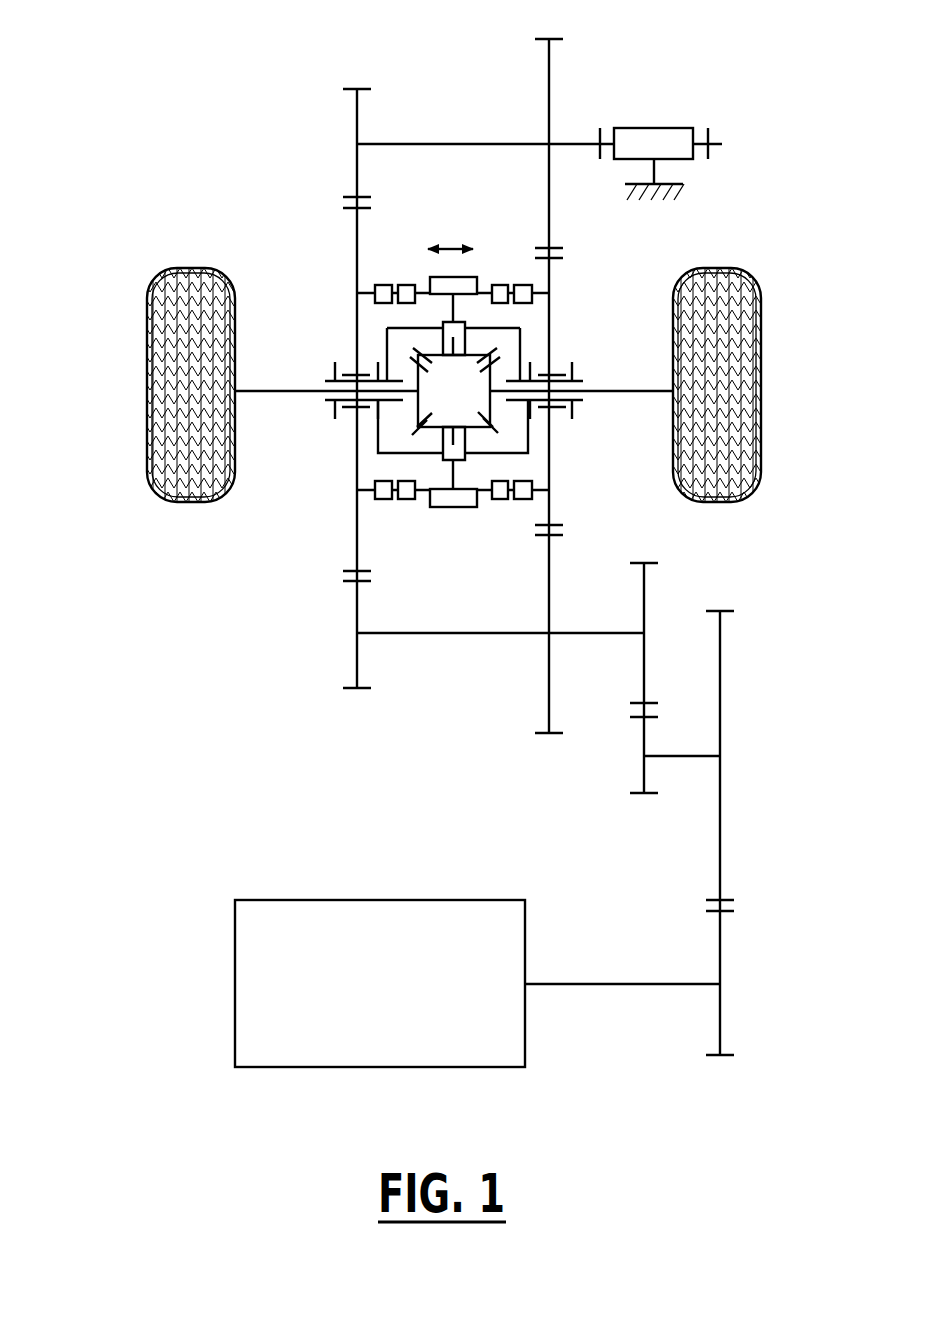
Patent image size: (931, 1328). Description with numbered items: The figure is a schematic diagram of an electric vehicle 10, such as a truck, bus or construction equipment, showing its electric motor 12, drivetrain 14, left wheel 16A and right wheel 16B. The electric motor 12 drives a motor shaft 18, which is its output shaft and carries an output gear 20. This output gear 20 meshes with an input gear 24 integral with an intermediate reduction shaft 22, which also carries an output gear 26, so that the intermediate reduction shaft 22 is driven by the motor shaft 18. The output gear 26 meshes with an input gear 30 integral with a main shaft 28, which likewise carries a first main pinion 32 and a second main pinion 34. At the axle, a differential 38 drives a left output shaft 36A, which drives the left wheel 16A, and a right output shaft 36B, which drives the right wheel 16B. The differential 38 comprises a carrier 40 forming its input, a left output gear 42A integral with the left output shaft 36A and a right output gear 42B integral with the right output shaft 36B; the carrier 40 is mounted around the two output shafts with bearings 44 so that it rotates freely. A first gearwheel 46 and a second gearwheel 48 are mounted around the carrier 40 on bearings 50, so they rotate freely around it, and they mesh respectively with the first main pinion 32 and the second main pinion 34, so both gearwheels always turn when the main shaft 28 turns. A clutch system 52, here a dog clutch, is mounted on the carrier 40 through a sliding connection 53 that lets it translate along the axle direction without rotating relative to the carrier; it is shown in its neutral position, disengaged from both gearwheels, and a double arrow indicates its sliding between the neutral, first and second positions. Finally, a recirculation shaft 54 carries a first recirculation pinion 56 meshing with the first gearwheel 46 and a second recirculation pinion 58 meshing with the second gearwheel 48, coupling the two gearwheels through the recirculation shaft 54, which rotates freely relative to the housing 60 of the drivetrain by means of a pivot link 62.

The electric vehicle 10 is at (205, 107).
The electric motor 12 is at (380, 983).
The drivetrain 14 is at (212, 752).
The left wheel 16A is at (190, 268).
The right wheel 16B is at (713, 268).
The motor shaft 18 is at (610, 984).
The output gear 20 is at (720, 1027).
The intermediate reduction shaft 22 is at (682, 758).
The input gear 24 is at (720, 833).
The output gear 26 is at (644, 735).
The main shaft 28 is at (475, 633).
The input gear 30 is at (647, 603).
The first main pinion 32 is at (549, 662).
The second main pinion 34 is at (357, 655).
The left output shaft 36A is at (258, 390).
The right output shaft 36B is at (650, 390).
The differential 38 is at (552, 313).
The carrier 40 is at (503, 453).
The left output gear 42A is at (412, 358).
The right output gear 42B is at (549, 495).
The bearings 44 is at (324, 383).
The first gearwheel 46 is at (549, 327).
The second gearwheel 48 is at (357, 327).
The bearings 50 is at (346, 418).
The clutch system 52 is at (419, 500).
The sliding connection 53 is at (458, 507).
The recirculation shaft 54 is at (418, 144).
The first recirculation pinion 56 is at (552, 57).
The second recirculation pinion 58 is at (357, 115).
The housing 60 is at (656, 170).
The pivot link 62 is at (655, 143).